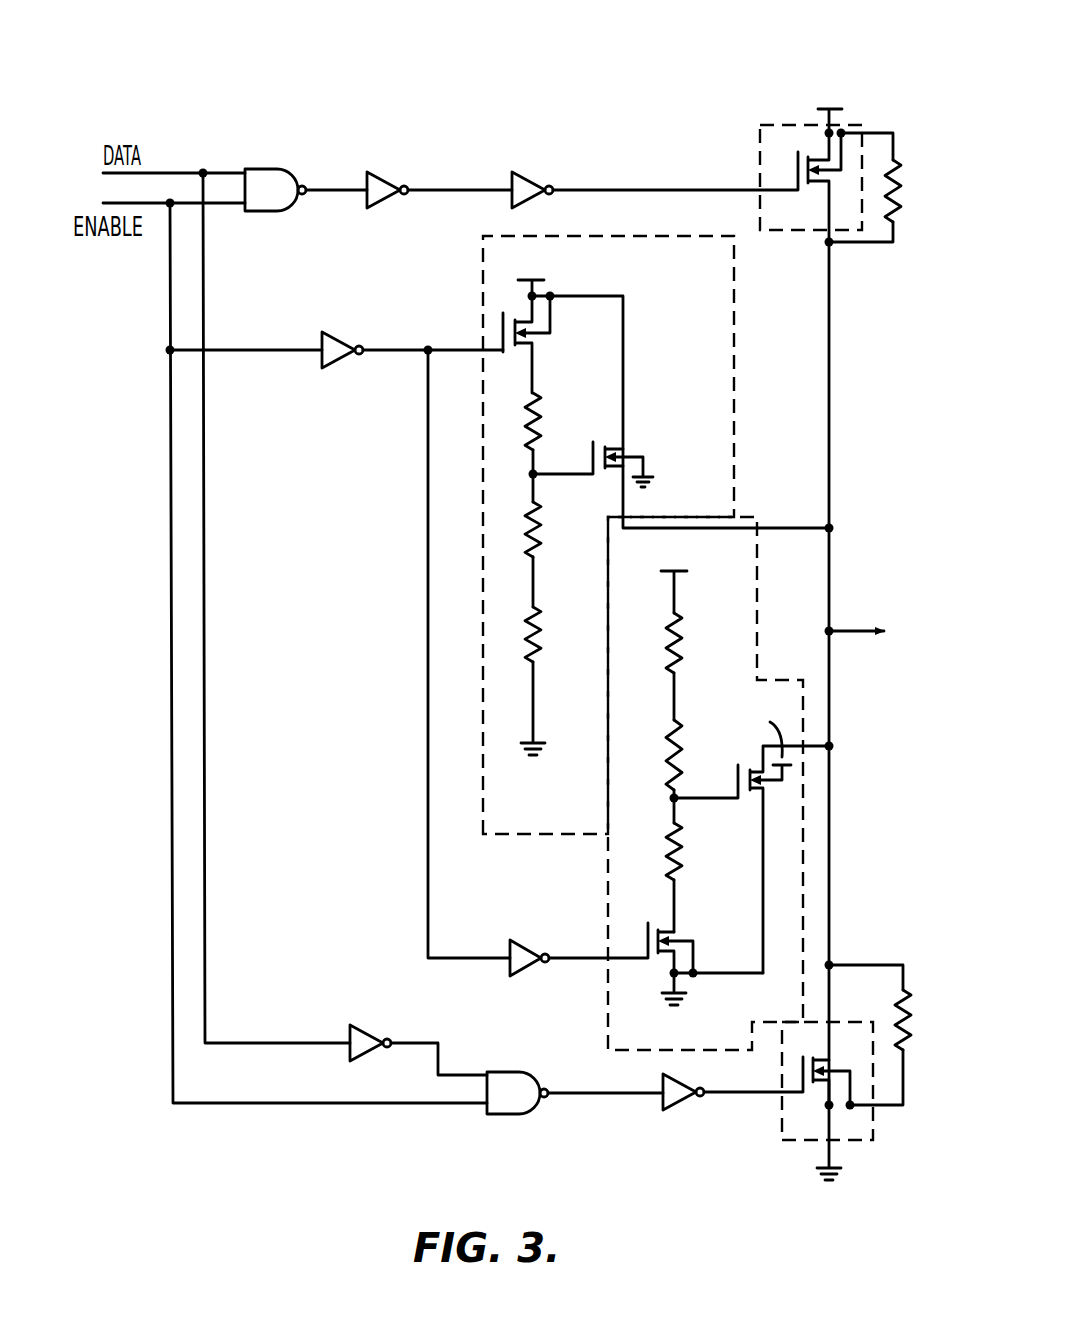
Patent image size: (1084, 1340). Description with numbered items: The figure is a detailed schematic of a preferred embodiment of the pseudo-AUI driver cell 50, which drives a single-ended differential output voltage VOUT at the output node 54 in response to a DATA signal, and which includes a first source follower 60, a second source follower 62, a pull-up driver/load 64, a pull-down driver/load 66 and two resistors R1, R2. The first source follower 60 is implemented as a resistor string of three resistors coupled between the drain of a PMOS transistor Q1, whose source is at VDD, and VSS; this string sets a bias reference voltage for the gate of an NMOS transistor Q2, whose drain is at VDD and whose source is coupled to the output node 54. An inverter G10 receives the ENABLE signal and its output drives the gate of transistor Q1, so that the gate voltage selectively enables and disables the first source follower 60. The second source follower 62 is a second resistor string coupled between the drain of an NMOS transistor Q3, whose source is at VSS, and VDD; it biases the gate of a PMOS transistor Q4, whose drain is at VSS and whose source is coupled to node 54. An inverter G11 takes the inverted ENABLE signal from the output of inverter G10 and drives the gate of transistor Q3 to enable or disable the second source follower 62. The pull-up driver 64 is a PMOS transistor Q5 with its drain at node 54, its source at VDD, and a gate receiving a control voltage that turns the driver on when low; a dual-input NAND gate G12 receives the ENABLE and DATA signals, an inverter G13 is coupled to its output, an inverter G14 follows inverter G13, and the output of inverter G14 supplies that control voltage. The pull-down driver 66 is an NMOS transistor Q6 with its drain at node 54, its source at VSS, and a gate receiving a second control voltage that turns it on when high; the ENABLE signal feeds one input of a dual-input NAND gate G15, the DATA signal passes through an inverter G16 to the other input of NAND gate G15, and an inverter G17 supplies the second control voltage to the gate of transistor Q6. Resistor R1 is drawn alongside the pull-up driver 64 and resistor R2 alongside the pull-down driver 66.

The pseudo-AUI driver cell 50 is at (603, 56).
The node 54 is at (832, 628).
The first source follower 60 is at (658, 535).
The second source follower 62 is at (721, 783).
The pull-up driver/load 64 is at (794, 160).
The pull-down driver/load 66 is at (802, 1123).
The inverter G10 is at (338, 337).
The inverter G11 is at (522, 942).
The dual-input NAND gate G12 is at (277, 173).
The inverter G13 is at (383, 178).
The inverter G14 is at (530, 178).
The dual-input NAND gate G15 is at (520, 1073).
The inverter G16 is at (365, 1025).
The inverter G17 is at (678, 1108).
The PMOS transistor Q1 is at (543, 341).
The NMOS transistor Q2 is at (632, 447).
The NMOS transistor Q3 is at (681, 940).
The PMOS transistor Q4 is at (743, 765).
The PMOS transistor Q5 is at (839, 187).
The NMOS transistor Q6 is at (843, 1071).
The resistor R1 is at (898, 191).
The resistor R2 is at (905, 1010).